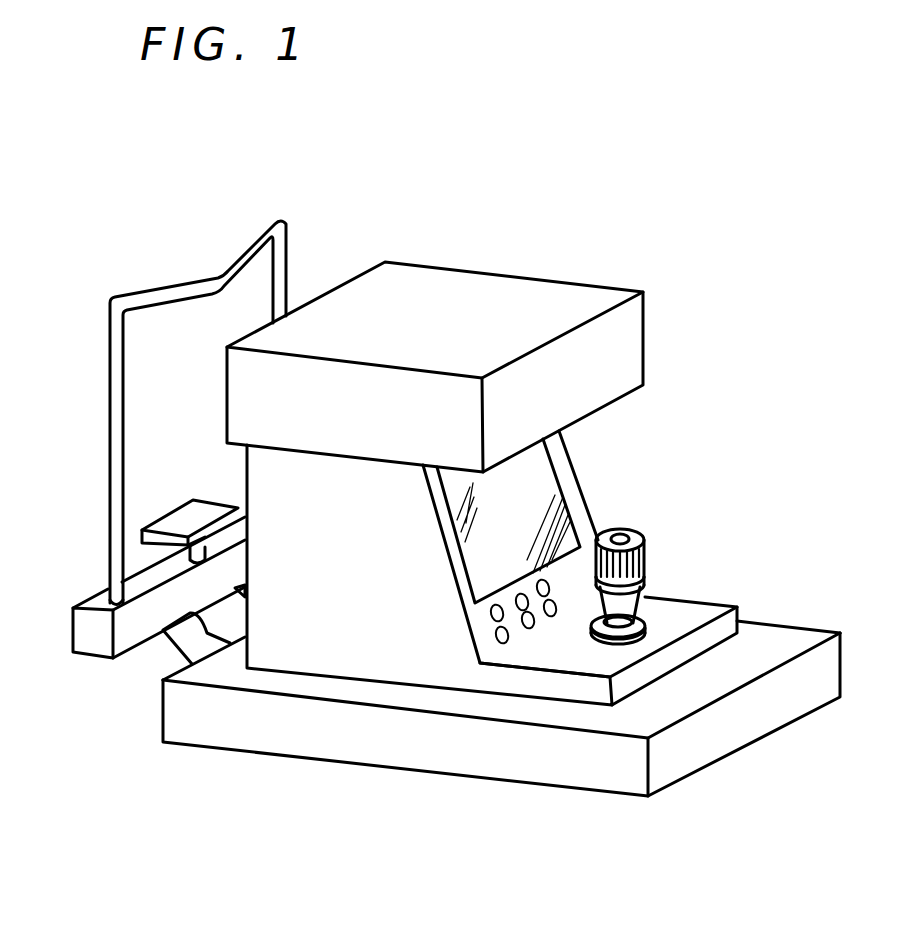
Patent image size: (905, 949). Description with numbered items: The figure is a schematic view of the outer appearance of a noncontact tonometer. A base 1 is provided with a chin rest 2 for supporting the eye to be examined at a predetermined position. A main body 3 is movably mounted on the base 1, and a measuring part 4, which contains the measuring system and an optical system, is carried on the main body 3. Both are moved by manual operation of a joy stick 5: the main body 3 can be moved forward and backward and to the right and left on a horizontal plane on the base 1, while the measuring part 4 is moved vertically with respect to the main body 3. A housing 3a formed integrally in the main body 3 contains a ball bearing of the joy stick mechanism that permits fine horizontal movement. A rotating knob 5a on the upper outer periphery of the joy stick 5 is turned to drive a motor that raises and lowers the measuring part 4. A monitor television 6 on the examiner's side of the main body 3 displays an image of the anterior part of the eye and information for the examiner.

The base 1 is at (233, 722).
The chin rest 2 is at (140, 687).
The main body 3 is at (375, 643).
The housing 3a is at (520, 683).
The measuring part 4 is at (557, 300).
The joy stick 5 is at (678, 538).
The rotating knob 5a is at (645, 558).
The monitor television 6 is at (583, 497).